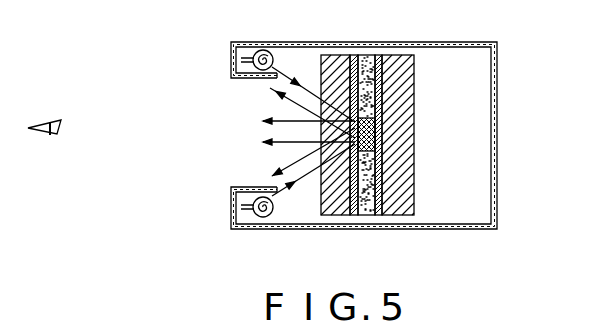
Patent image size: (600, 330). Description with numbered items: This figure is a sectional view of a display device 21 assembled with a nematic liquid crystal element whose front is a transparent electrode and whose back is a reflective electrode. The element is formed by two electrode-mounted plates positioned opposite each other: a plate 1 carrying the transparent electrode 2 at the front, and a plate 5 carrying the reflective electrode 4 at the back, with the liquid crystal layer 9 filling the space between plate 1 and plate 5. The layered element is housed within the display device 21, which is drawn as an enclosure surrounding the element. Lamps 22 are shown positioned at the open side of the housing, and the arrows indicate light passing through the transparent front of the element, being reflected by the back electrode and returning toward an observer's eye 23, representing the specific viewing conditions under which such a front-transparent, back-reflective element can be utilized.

The plate 1 is at (336, 62).
The transparent electrode 2 is at (354, 57).
The liquid crystal layer 9 is at (370, 59).
The reflective electrode 4 is at (380, 64).
The plate 5 is at (405, 108).
The display device 21 is at (497, 128).
The light source lamp 22 is at (263, 50).
The observer eye 23 is at (50, 137).